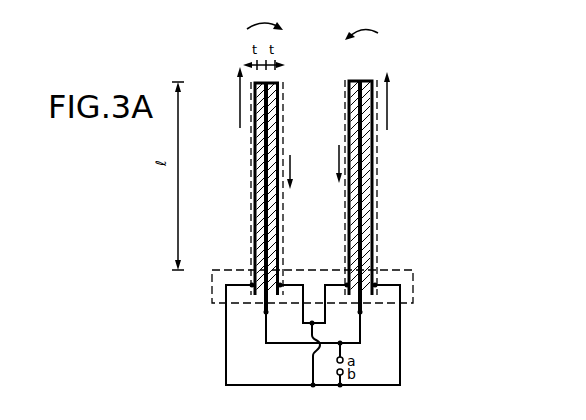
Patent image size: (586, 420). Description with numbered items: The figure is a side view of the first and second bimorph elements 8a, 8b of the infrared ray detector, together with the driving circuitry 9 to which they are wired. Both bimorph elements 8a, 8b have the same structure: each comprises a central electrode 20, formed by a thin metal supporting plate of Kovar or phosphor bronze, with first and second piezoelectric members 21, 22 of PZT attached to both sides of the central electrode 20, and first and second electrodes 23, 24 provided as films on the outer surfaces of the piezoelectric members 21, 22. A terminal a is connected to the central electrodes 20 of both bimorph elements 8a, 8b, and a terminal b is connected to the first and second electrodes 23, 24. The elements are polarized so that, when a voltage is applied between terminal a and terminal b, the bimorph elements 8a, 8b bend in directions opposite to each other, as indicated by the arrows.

The first bimorph element 8a is at (226, 83).
The second bimorph element 8b is at (390, 116).
The drive circuit 9 is at (412, 270).
The central electrode 20 is at (269, 220).
The first piezoelectric member 21 is at (255, 173).
The second piezoelectric member 22 is at (277, 164).
The first electrode 23 is at (250, 143).
The second electrode 24 is at (284, 122).